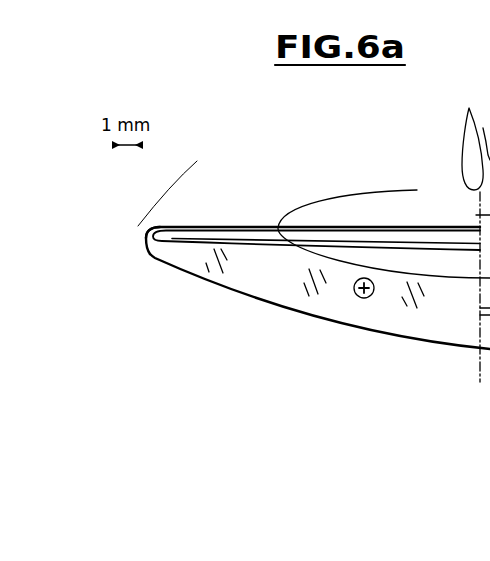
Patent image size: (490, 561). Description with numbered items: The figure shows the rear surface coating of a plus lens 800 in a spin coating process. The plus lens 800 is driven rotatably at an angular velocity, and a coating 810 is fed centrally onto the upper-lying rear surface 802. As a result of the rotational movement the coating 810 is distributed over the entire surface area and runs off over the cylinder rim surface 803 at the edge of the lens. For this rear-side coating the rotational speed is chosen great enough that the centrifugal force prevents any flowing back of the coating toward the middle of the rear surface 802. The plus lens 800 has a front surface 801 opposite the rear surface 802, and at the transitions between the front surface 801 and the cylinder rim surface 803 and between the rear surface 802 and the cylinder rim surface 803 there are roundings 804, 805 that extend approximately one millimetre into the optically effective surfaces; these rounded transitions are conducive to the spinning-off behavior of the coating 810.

The plus lens 800 is at (283, 290).
The front surface 801 is at (390, 336).
The rear surface 802 is at (265, 244).
The cylinder rim surface 803 is at (150, 253).
The rounding 804 is at (150, 256).
The rounding 805 is at (134, 233).
The coating 810 is at (464, 160).